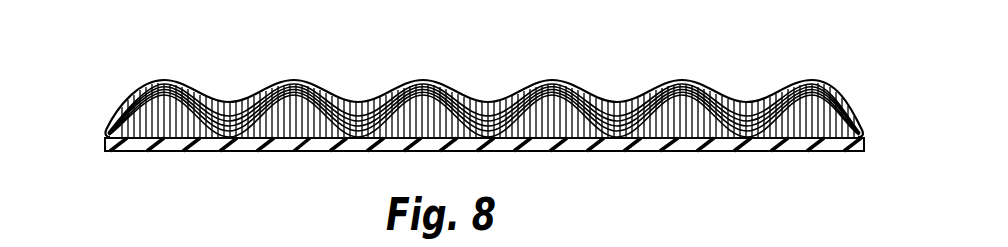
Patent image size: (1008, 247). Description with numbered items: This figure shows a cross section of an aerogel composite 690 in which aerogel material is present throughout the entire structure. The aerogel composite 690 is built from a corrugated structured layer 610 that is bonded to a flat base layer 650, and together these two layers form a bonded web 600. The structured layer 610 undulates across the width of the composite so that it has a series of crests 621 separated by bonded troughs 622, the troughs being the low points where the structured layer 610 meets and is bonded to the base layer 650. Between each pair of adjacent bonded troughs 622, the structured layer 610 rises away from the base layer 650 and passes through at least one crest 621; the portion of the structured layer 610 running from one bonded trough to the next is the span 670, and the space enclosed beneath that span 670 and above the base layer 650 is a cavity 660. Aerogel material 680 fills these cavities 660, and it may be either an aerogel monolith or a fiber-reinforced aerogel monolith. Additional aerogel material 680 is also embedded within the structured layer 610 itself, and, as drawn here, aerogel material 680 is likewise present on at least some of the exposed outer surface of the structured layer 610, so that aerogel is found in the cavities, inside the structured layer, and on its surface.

The aerogel composite 690 is at (131, 62).
The bonded web 600 is at (108, 98).
The structured layer 610 is at (168, 82).
The crest 621 is at (303, 80).
The bonded troughs 622 is at (613, 142).
The base layer 650 is at (141, 152).
The cavities 660 is at (690, 127).
The span 670 is at (613, 100).
The aerogel material 680 is at (757, 105).